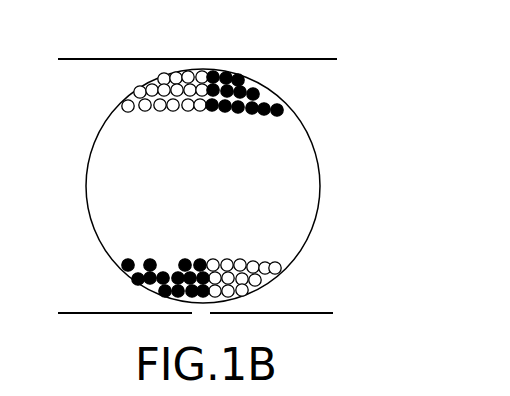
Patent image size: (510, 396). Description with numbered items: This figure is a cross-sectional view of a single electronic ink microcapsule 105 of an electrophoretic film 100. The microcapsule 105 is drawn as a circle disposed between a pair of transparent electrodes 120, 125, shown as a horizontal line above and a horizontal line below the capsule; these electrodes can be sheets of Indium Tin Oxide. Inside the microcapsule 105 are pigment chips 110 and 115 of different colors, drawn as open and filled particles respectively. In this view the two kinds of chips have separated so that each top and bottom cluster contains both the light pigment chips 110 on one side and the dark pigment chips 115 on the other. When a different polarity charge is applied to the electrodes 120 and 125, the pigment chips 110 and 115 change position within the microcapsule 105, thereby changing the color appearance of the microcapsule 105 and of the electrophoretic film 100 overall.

The electrophoretic film 100 is at (345, 104).
The electronic ink microcapsule 105 is at (310, 195).
The pigment chips 110 is at (125, 106).
The pigment chips 115 is at (267, 89).
The transparent electrode 120 is at (86, 59).
The transparent electrode 125 is at (327, 313).